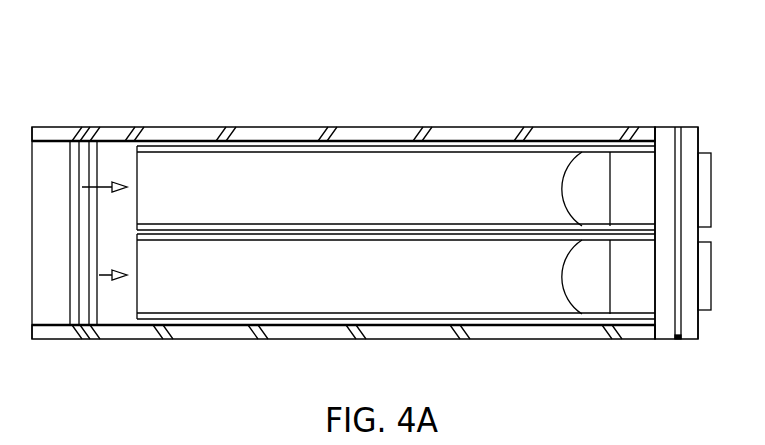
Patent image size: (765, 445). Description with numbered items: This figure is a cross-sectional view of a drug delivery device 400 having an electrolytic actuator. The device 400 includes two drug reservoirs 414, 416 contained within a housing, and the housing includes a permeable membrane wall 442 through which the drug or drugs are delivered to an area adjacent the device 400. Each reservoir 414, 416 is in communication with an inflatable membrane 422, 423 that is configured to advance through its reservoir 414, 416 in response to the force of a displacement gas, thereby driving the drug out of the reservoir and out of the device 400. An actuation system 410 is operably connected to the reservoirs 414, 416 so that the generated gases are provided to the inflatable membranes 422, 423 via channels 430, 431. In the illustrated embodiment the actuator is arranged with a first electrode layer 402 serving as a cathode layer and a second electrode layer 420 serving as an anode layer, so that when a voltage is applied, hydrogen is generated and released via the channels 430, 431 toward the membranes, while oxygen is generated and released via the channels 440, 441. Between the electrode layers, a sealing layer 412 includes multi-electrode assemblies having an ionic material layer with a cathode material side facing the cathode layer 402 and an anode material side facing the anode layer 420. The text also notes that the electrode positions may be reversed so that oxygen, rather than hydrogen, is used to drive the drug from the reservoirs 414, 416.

The drug delivery device 400 is at (624, 55).
The first electrode layer 402 is at (658, 334).
The actuation system 410 is at (678, 128).
The sealing layer 412 is at (677, 333).
The drug reservoir 414 is at (392, 307).
The drug reservoir 416 is at (480, 165).
The second electrode layer 420 is at (688, 331).
The inflatable membrane 422 is at (562, 276).
The inflatable membrane 423 is at (562, 188).
The channel 430 is at (610, 276).
The channel 431 is at (610, 188).
The channel 440 is at (708, 312).
The channel 441 is at (703, 153).
The permeable membrane wall 442 is at (280, 135).